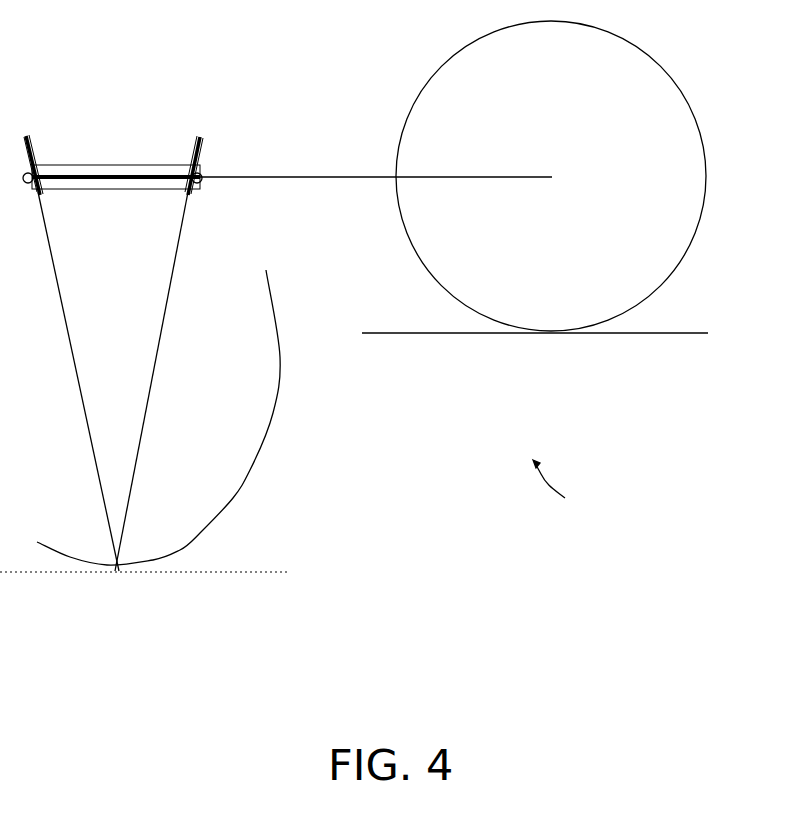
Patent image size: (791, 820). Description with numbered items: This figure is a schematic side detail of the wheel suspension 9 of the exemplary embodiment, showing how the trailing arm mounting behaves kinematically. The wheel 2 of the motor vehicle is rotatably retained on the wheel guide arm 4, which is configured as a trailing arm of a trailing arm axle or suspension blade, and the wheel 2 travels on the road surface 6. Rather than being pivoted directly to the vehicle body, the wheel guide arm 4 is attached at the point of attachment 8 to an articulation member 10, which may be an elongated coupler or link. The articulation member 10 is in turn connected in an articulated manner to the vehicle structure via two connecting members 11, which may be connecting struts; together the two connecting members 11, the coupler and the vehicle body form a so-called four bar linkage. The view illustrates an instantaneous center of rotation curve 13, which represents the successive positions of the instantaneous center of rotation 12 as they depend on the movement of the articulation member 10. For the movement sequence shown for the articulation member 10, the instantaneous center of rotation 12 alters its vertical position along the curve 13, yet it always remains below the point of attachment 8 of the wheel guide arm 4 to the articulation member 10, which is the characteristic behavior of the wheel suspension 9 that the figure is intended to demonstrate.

The wheel 2 is at (647, 73).
The wheel guide arm 4 is at (265, 177).
The road surface 6 is at (695, 333).
The point of attachment 8 is at (107, 180).
The wheel suspension 9 is at (563, 492).
The articulation member 10 is at (155, 187).
The connecting members 11 is at (37, 152).
The instantaneous center of rotation 12 is at (120, 563).
The instantaneous center of rotation curve 13 is at (237, 500).